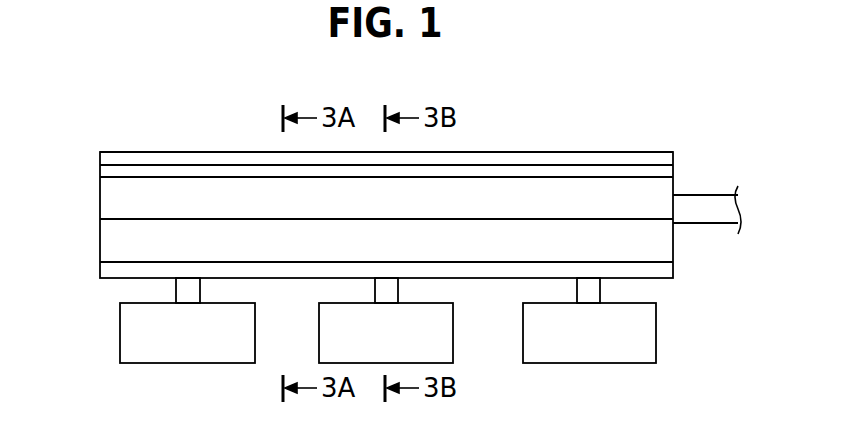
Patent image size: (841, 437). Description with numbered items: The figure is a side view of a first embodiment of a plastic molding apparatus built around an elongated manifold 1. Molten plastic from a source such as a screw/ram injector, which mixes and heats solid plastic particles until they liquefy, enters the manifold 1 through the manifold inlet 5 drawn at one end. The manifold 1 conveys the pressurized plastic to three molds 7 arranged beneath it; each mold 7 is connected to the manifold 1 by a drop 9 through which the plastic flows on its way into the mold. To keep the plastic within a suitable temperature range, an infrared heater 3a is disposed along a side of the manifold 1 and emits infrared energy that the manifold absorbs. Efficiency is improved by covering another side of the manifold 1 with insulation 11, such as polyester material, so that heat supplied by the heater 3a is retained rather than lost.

The manifold 1 is at (102, 270).
The insulation 11 is at (632, 152).
The infrared heater 3a is at (667, 187).
The manifold inlet 5 is at (713, 217).
The drop 9 is at (200, 289).
The mold 7 is at (187, 355).